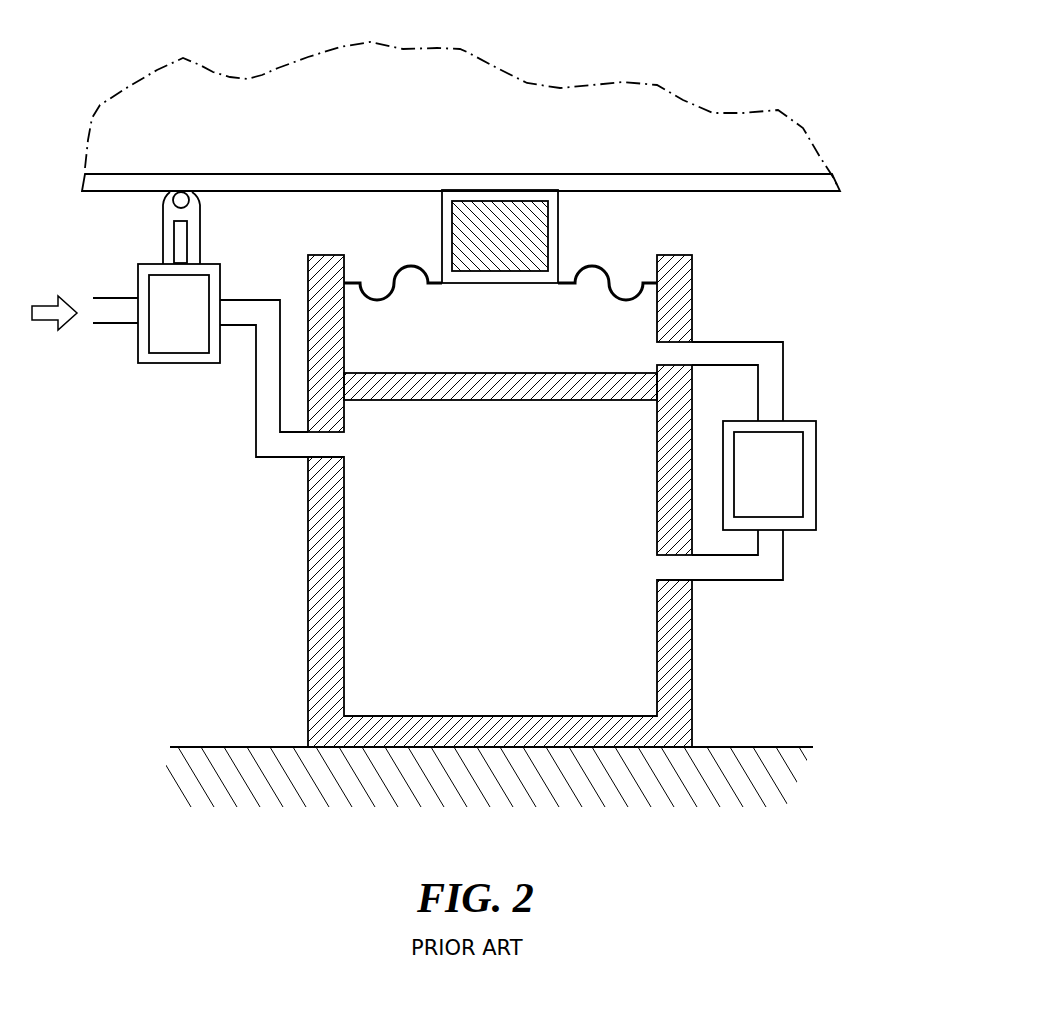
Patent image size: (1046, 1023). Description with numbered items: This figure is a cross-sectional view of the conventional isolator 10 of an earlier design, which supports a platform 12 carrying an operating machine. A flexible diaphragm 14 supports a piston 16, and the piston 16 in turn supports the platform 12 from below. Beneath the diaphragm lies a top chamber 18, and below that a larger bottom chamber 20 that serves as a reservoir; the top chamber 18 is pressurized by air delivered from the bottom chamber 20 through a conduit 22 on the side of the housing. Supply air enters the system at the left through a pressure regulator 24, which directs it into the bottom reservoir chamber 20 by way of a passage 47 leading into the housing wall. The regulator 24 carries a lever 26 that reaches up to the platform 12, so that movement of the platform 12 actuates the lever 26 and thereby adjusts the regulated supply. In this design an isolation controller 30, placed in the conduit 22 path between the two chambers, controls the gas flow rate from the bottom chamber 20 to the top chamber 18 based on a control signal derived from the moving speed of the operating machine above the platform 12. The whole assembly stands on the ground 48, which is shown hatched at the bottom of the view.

The isolator 10 is at (744, 269).
The platform 12 is at (622, 108).
The flexible diaphragm 14 is at (394, 268).
The piston 16 is at (560, 222).
The top chamber 18 is at (490, 345).
The bottom chamber 20 is at (490, 589).
The conduit 22 is at (750, 581).
The pressure regulator 24 is at (166, 325).
The lever 26 is at (163, 232).
The isolation controller 30 is at (759, 486).
The inlet conduit 47 is at (257, 433).
The ground 48 is at (238, 747).